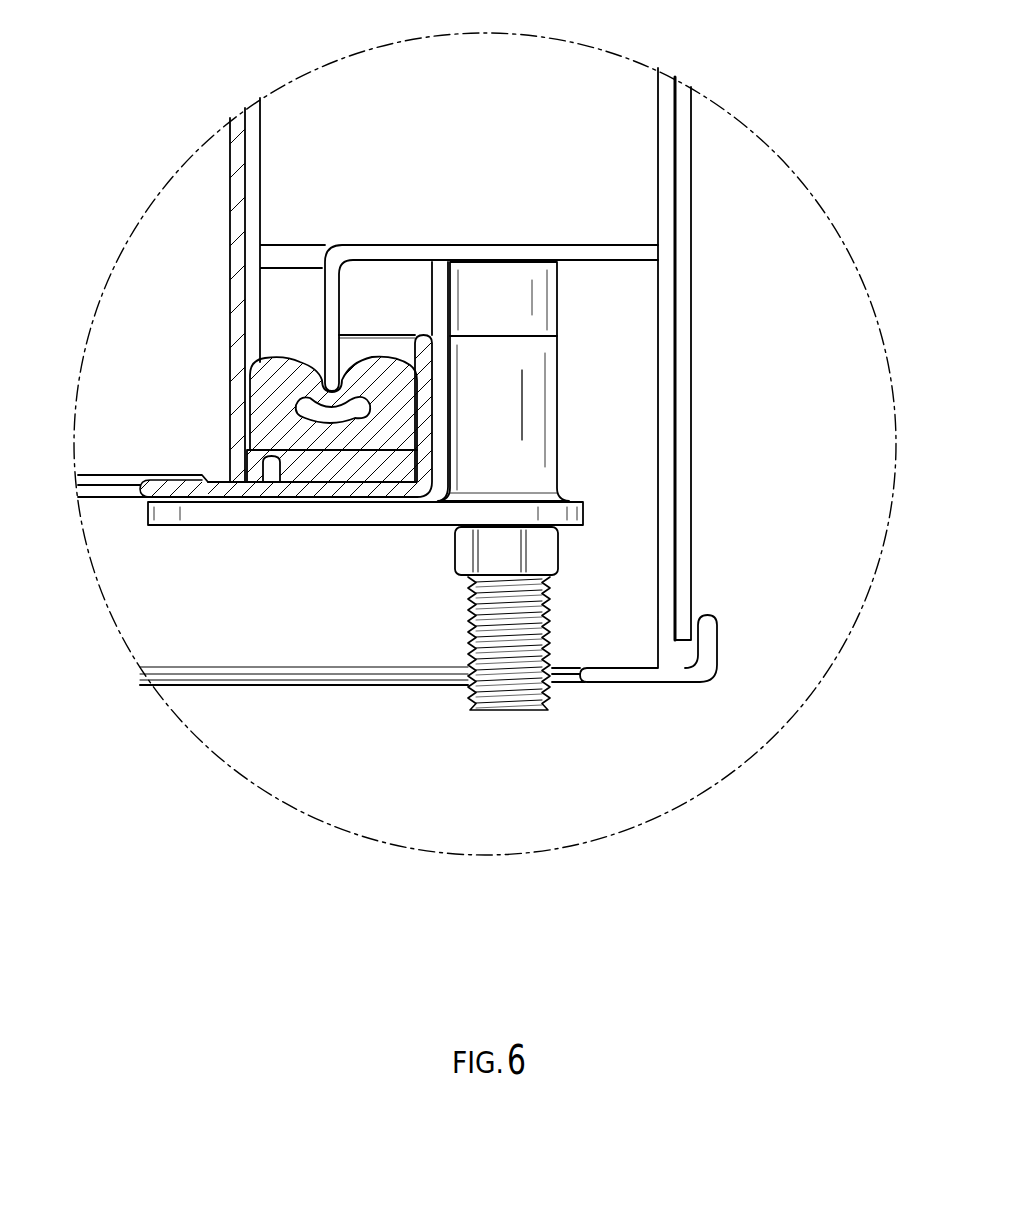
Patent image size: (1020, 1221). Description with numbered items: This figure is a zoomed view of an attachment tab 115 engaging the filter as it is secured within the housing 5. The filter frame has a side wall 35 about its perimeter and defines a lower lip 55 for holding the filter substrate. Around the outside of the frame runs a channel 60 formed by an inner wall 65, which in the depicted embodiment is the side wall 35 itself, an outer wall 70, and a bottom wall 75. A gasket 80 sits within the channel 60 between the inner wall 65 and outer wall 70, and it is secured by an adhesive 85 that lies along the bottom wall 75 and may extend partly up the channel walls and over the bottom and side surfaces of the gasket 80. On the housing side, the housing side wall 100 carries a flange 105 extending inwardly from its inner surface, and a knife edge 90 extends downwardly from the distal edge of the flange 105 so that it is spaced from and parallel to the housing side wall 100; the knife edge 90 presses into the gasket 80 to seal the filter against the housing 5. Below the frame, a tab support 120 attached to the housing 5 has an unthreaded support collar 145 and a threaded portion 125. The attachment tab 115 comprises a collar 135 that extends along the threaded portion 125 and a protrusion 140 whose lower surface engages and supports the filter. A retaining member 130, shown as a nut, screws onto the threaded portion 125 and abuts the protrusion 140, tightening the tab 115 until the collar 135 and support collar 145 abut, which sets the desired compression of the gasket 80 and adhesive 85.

The housing 5 is at (702, 575).
The side wall 35 is at (236, 193).
The lower lip 55 is at (172, 488).
The channel 60 is at (368, 330).
The inner wall 65 is at (235, 375).
The outer wall 70 is at (423, 343).
The bottom wall 75 is at (332, 492).
The gasket 80 is at (272, 427).
The adhesive 85 is at (310, 465).
The knife edge 90 is at (327, 300).
The housing side wall 100 is at (700, 283).
The flange 105 is at (545, 252).
The attachment tab 115 is at (565, 478).
The tab support 120 is at (563, 307).
The threaded portion 125 is at (548, 608).
The retaining member 130 is at (558, 545).
The collar 135 is at (508, 422).
The protrusion 140 is at (202, 512).
The support collar 145 is at (558, 277).